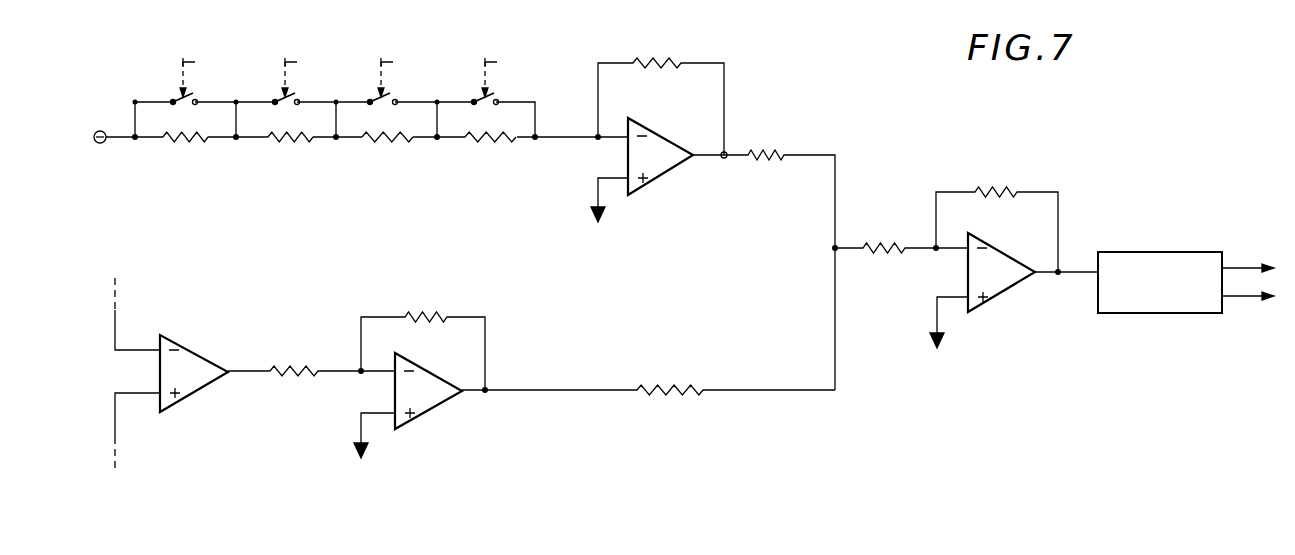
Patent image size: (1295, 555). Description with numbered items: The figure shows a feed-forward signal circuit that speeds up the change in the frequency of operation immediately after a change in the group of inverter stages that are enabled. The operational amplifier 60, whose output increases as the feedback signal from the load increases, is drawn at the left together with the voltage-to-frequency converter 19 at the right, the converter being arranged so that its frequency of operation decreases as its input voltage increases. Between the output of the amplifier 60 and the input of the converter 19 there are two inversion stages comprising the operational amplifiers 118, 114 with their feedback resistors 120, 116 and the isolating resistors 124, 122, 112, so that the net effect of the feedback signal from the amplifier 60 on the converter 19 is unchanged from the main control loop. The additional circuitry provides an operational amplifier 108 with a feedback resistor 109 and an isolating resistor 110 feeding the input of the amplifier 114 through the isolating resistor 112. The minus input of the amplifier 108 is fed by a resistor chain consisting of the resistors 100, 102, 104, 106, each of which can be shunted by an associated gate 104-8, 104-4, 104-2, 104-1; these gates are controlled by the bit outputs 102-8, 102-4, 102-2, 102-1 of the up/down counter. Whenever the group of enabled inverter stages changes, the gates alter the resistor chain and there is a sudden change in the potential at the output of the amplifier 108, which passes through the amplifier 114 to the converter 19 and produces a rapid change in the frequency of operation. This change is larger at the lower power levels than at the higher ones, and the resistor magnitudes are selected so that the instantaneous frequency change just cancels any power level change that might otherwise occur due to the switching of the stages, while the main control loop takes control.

The voltage-to-frequency converter 19 is at (1173, 252).
The operational amplifier 60 is at (195, 352).
The resistor 100 is at (189, 142).
The resistor 102 is at (291, 142).
The resistor 104 is at (384, 142).
The resistor 106 is at (488, 142).
The gate control input 102-8 is at (215, 77).
The gate control input 102-4 is at (317, 77).
The gate control input 102-2 is at (412, 77).
The gate control input 102-1 is at (516, 75).
The gate 104-8 is at (185, 112).
The gate 104-4 is at (282, 112).
The gate 104-2 is at (376, 112).
The gate 104-1 is at (480, 112).
The operational amplifier 108 is at (655, 134).
The feedback resistor 109 is at (675, 47).
The isolating resistor 110 is at (768, 151).
The isolating resistor 112 is at (881, 245).
The operational amplifier 114 is at (1003, 287).
The feedback resistor 116 is at (1000, 190).
The operational amplifier 118 is at (427, 411).
The feedback resistor 120 is at (431, 314).
The isolating resistor 122 is at (671, 386).
The isolating resistor 124 is at (297, 367).